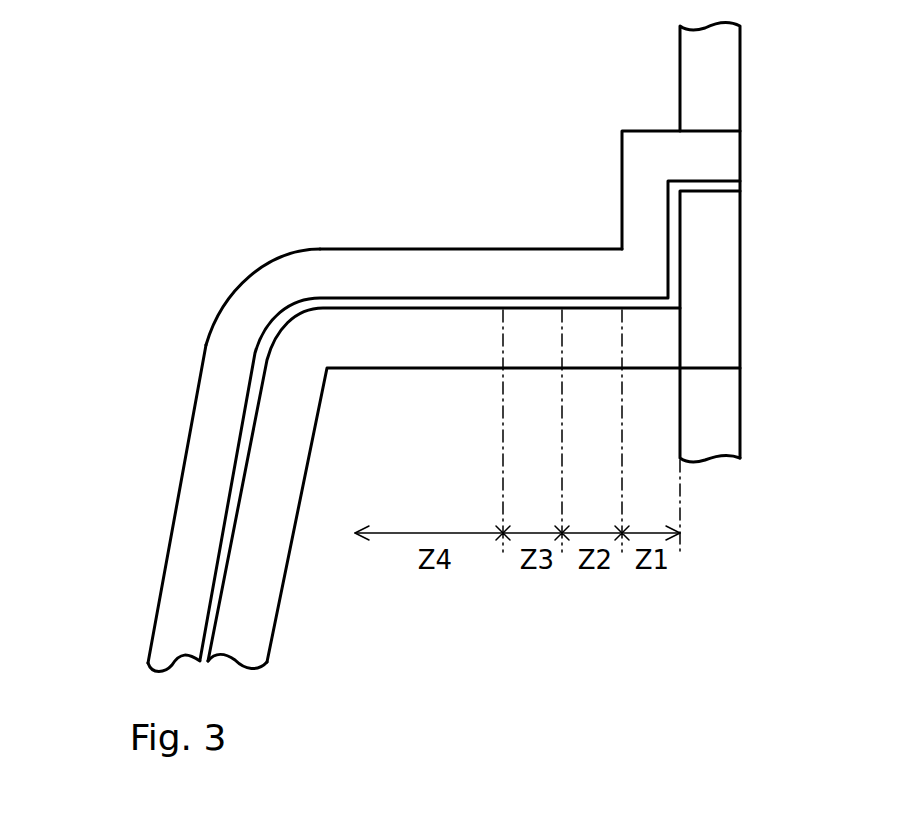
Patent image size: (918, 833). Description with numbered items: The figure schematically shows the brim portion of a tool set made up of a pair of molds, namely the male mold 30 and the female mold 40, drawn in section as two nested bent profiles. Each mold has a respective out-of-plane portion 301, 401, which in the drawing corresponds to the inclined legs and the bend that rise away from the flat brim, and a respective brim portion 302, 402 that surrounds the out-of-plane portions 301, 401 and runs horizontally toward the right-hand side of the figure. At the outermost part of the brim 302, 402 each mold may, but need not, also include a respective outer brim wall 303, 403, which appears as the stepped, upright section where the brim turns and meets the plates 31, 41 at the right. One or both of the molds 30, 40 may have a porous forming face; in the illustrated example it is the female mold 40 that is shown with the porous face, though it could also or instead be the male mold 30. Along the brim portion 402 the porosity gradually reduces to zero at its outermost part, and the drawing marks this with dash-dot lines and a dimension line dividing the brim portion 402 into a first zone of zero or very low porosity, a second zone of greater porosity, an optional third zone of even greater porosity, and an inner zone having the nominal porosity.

The male mold 30 is at (380, 270).
The out-of-plane portion 301 is at (128, 468).
The brim portion 302 is at (466, 220).
The outer brim wall 303 is at (600, 168).
The first plate 31 is at (710, 82).
The female mold 40 is at (252, 592).
The out-of-plane portion 401 is at (368, 582).
The brim portion 402 is at (634, 608).
The outer brim wall 403 is at (710, 247).
The second plate 41 is at (717, 422).